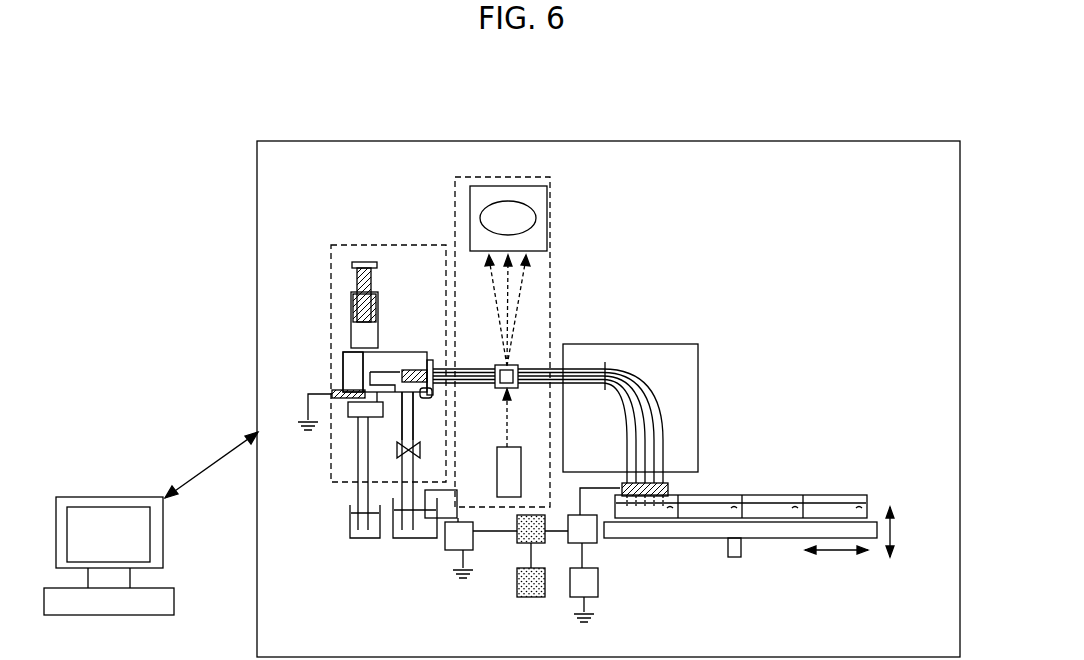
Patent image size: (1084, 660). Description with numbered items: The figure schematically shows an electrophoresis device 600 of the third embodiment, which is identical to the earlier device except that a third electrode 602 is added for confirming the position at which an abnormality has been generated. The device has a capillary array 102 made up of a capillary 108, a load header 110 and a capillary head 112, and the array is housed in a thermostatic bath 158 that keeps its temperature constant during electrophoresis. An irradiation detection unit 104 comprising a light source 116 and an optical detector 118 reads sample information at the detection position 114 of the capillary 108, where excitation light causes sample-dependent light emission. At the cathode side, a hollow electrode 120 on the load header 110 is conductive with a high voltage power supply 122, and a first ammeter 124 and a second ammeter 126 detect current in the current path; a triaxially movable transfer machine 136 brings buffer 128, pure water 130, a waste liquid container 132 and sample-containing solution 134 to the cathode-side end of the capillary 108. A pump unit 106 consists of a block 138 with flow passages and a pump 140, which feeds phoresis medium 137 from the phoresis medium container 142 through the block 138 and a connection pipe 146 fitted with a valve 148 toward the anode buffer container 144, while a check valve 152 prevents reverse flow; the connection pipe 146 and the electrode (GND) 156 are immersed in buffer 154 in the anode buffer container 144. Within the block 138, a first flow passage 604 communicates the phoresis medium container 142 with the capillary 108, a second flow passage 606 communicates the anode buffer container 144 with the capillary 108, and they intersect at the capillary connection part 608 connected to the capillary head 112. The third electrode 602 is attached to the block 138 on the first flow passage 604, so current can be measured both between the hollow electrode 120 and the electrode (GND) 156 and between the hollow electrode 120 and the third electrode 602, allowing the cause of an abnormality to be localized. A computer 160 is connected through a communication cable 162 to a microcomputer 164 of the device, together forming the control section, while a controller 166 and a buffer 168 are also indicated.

The electrophoresis device 600 is at (624, 141).
The capillary array 102 is at (626, 365).
The irradiation detection unit 104 is at (577, 177).
The pump unit 106 is at (393, 246).
The capillary 108 is at (576, 365).
The load header 110 is at (668, 468).
The capillary head 112 is at (435, 360).
The detection position 114 is at (508, 363).
The light source 116 is at (507, 497).
The optical detector 118 is at (527, 173).
The hollow electrode 120 is at (663, 505).
The high voltage power supply 122 is at (598, 585).
The first ammeter 124 is at (596, 545).
The second ammeter 126 is at (471, 550).
The buffer 128 is at (673, 498).
The pure water 130 is at (728, 503).
The waste liquid container 132 is at (781, 503).
The sample-containing solution 134 is at (840, 503).
The transfer machine 136 is at (773, 530).
The phoresis medium 137 is at (352, 532).
The block 138 is at (352, 345).
The pump 140 is at (412, 285).
The phoresis medium container 142 is at (360, 543).
The anode buffer container 144 is at (420, 540).
The connection pipe 146 is at (403, 445).
The valve 148 is at (400, 437).
The check valve 152 is at (355, 405).
The buffer 154 is at (400, 533).
The electrode (GND) 156 is at (425, 540).
The thermostatic bath 158 is at (675, 365).
The computer 160 is at (98, 497).
The communication cable 162 is at (204, 463).
The microcomputer 164 is at (540, 545).
The controller 166 is at (525, 598).
The buffer 168 is at (642, 508).
The third electrode 602 is at (338, 393).
The first flow passage 604 is at (357, 368).
The second flow passage 606 is at (440, 395).
The capillary connection part 608 is at (410, 357).